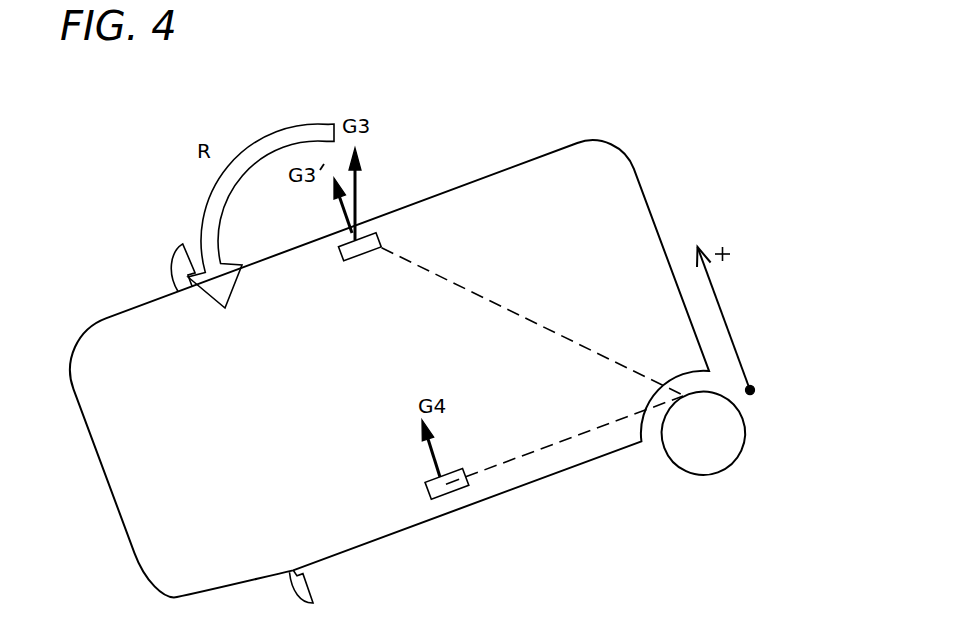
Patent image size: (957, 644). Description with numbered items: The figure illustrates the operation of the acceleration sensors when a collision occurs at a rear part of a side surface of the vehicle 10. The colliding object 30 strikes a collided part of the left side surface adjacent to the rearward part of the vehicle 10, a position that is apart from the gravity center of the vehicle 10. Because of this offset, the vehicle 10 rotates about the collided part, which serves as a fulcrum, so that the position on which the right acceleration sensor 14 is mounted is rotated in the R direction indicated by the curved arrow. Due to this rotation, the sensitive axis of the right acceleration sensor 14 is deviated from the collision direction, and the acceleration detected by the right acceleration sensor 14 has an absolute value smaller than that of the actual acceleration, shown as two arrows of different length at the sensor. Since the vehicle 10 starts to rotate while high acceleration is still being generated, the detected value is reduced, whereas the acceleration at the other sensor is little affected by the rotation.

The vehicle 10 is at (645, 130).
The right acceleration sensor 14 is at (380, 213).
The colliding object 30 is at (717, 447).